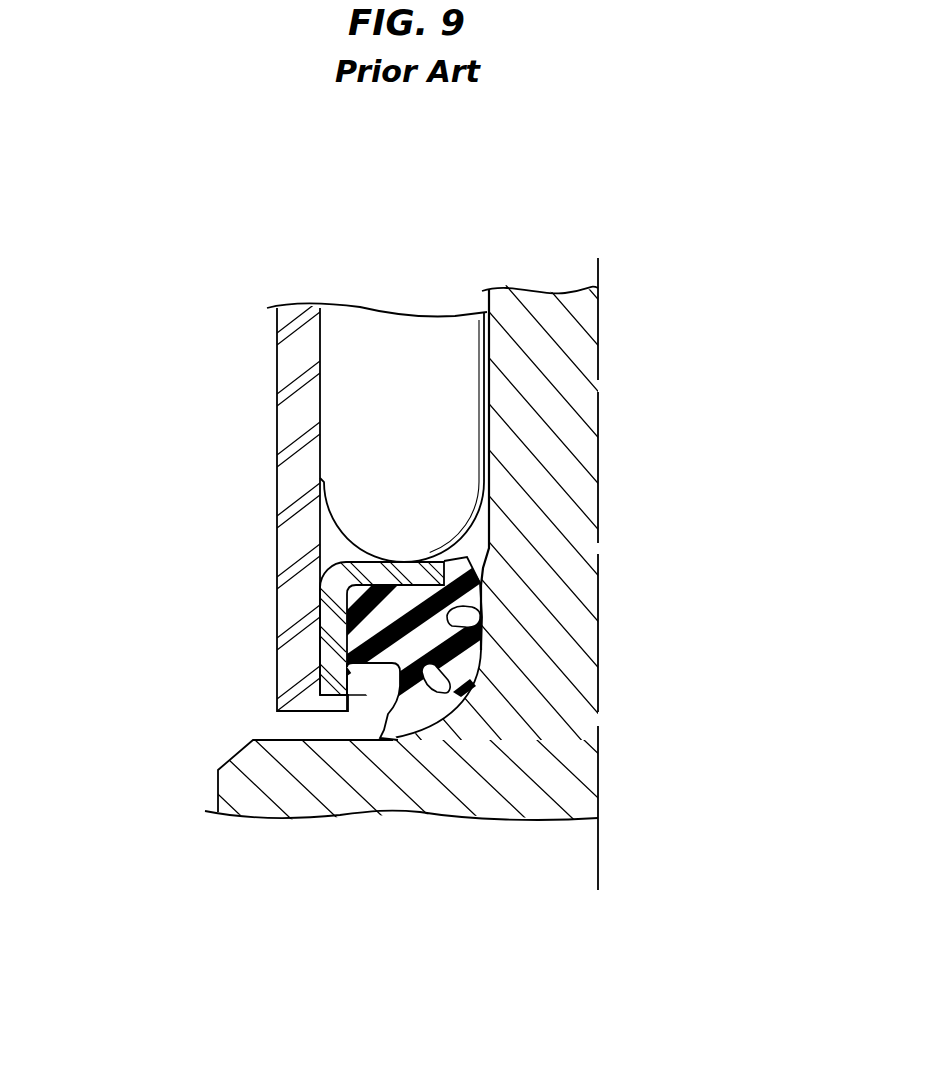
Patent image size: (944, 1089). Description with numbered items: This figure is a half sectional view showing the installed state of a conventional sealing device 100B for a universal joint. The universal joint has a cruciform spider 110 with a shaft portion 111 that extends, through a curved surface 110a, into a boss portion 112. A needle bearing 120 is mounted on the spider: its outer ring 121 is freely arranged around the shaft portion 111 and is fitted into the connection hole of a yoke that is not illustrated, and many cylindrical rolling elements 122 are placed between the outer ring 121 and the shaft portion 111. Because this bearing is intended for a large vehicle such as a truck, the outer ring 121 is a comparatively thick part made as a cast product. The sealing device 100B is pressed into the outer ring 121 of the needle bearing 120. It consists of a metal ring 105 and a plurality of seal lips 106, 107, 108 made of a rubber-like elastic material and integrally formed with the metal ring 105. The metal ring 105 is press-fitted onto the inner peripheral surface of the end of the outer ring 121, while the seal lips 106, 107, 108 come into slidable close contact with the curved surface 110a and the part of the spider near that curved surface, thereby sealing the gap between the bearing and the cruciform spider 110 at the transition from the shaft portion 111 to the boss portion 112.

The sealing device 100B is at (394, 719).
The metal ring 105 is at (318, 634).
The seal lip 106 is at (397, 727).
The seal lip 107 is at (478, 677).
The seal lip 108 is at (483, 610).
The cruciform spider 110 is at (422, 486).
The curved surface 110a is at (433, 720).
The shaft portion 111 is at (577, 442).
The boss portion 112 is at (243, 787).
The needle bearing 120 is at (238, 465).
The outer ring 121 is at (287, 430).
The cylindrical rolling elements 122 is at (409, 333).